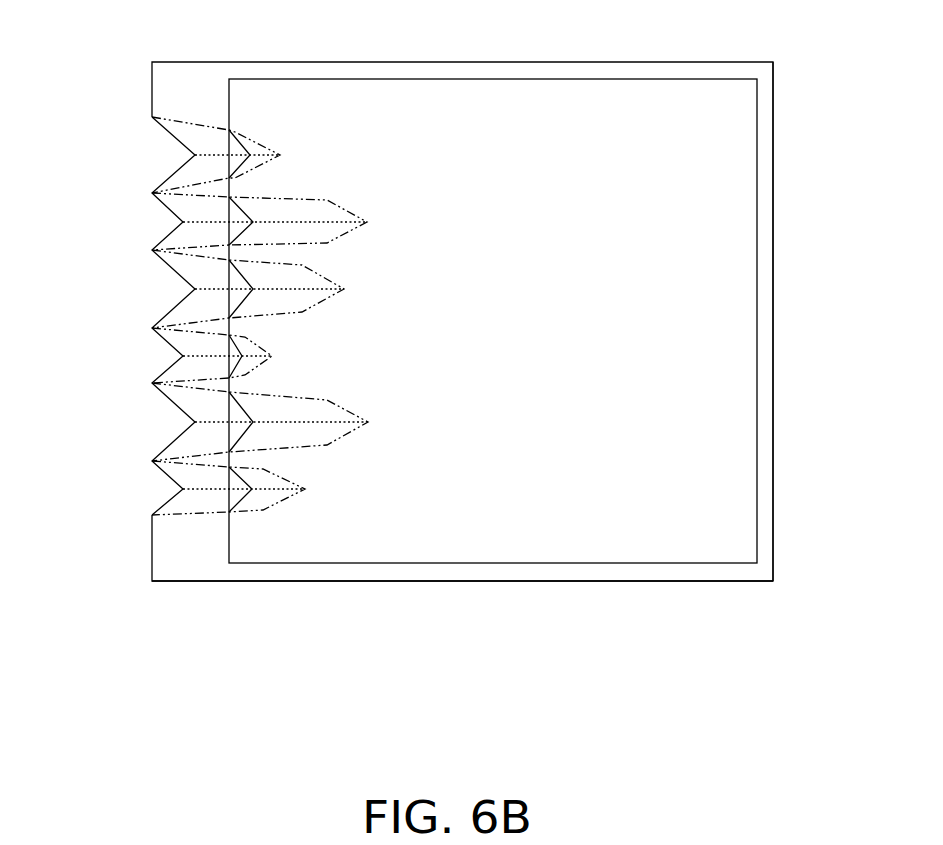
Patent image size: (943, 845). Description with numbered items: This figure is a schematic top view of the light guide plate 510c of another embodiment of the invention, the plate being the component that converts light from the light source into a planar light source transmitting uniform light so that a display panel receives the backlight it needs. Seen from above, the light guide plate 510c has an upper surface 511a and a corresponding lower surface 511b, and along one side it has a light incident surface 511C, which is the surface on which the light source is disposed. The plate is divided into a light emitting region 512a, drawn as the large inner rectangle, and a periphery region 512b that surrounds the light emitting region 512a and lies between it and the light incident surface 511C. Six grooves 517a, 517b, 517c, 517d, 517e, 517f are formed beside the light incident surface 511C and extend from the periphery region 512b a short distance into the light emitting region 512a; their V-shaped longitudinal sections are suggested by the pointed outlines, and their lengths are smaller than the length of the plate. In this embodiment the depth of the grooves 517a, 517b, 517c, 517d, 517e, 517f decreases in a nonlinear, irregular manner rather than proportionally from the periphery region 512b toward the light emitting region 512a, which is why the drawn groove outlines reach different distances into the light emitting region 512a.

The light guide plate 510c is at (690, 642).
The upper surface 511a is at (712, 573).
The lower surface 511b is at (592, 582).
The light incident surface 511C is at (152, 103).
The light emitting region 512a is at (443, 103).
The periphery region 512b is at (183, 85).
The groove 517a is at (208, 171).
The groove 517b is at (198, 238).
The groove 517c is at (210, 305).
The groove 517d is at (198, 372).
The groove 517e is at (210, 439).
The groove 517f is at (198, 505).